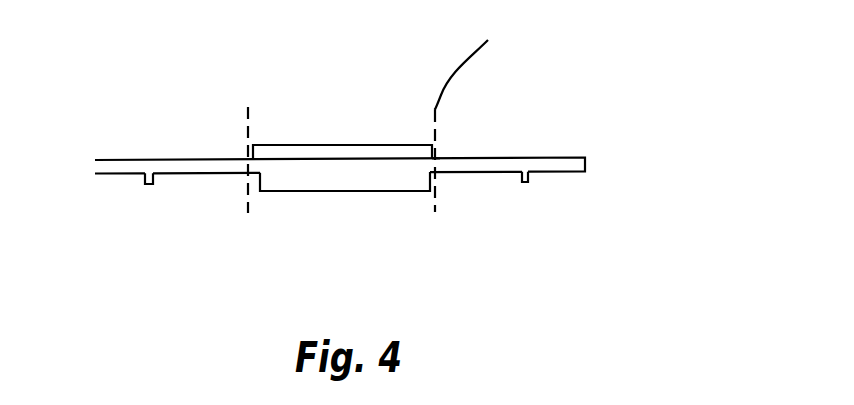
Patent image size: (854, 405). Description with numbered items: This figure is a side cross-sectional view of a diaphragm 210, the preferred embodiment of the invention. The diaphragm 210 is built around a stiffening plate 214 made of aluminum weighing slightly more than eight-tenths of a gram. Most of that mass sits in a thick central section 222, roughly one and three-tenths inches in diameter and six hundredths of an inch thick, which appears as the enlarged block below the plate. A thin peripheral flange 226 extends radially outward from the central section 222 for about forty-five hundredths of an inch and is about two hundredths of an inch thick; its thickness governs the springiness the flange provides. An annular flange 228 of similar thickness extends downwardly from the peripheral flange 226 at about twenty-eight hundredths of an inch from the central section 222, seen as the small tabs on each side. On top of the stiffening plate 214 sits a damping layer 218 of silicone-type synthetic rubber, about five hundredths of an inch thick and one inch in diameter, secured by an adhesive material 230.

The diaphragm 210 is at (585, 118).
The stiffening plate 214 is at (588, 160).
The damping layer 218 is at (308, 145).
The central section 222 is at (302, 180).
The peripheral flange 226 is at (145, 177).
The annular flange 228 is at (153, 184).
The adhesive material 230 is at (433, 157).